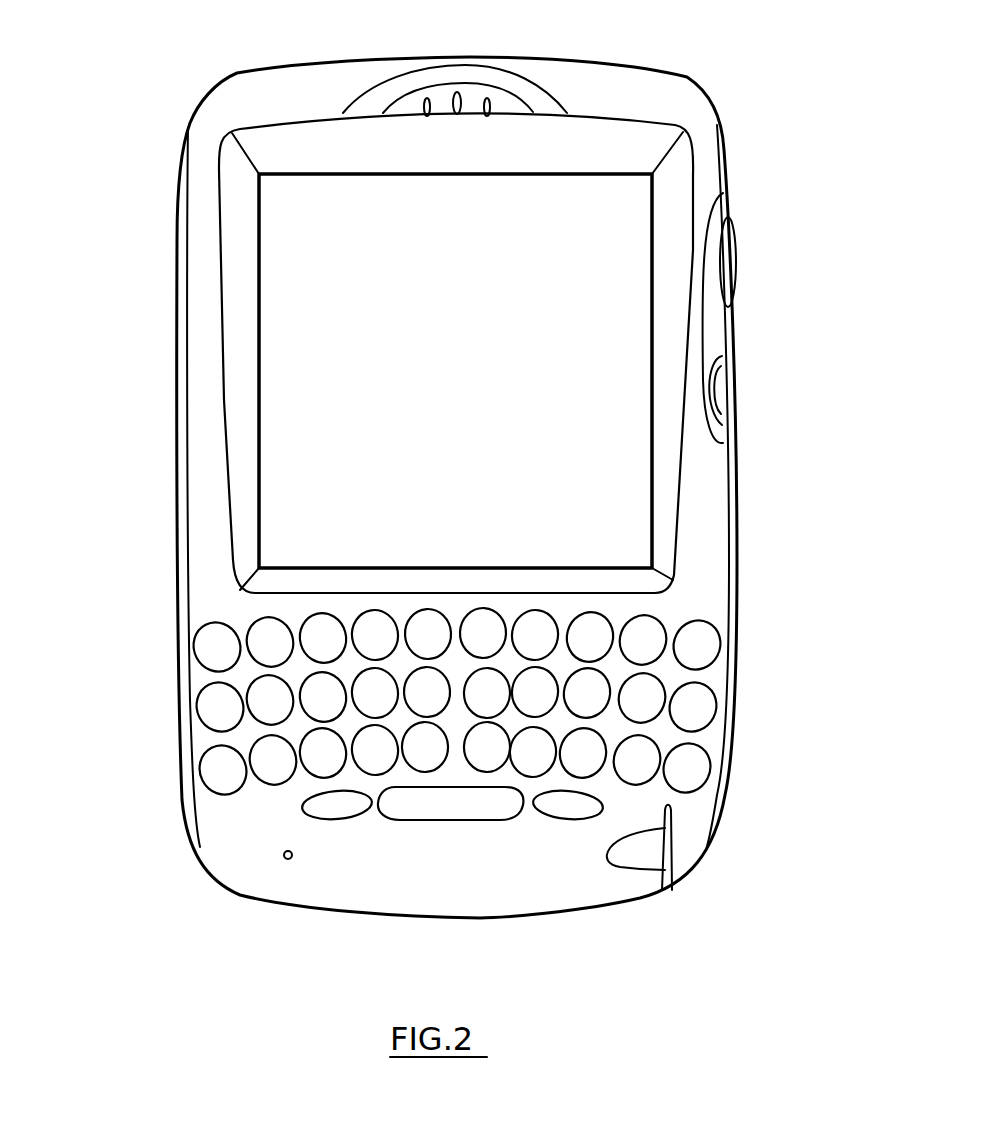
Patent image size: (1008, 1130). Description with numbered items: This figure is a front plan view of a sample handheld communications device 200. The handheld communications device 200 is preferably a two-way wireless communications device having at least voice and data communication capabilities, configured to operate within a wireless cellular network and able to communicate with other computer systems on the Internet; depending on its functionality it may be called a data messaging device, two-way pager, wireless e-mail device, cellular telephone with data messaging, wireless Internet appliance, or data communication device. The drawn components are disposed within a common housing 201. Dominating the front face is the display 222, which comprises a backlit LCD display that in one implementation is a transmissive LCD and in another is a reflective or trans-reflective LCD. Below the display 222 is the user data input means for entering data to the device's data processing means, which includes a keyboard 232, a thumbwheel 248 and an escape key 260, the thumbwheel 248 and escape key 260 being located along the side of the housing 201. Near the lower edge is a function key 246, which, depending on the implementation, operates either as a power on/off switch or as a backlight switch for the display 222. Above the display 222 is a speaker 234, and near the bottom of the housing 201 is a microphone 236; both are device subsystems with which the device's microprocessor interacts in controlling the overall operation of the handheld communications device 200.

The handheld communications device 200 is at (167, 103).
The housing 201 is at (306, 68).
The display 222 is at (653, 477).
The keyboard 232 is at (760, 607).
The speaker 234 is at (457, 114).
The microphone 236 is at (288, 860).
The function key 246 is at (617, 863).
The thumbwheel 248 is at (740, 260).
The escape key 260 is at (722, 380).